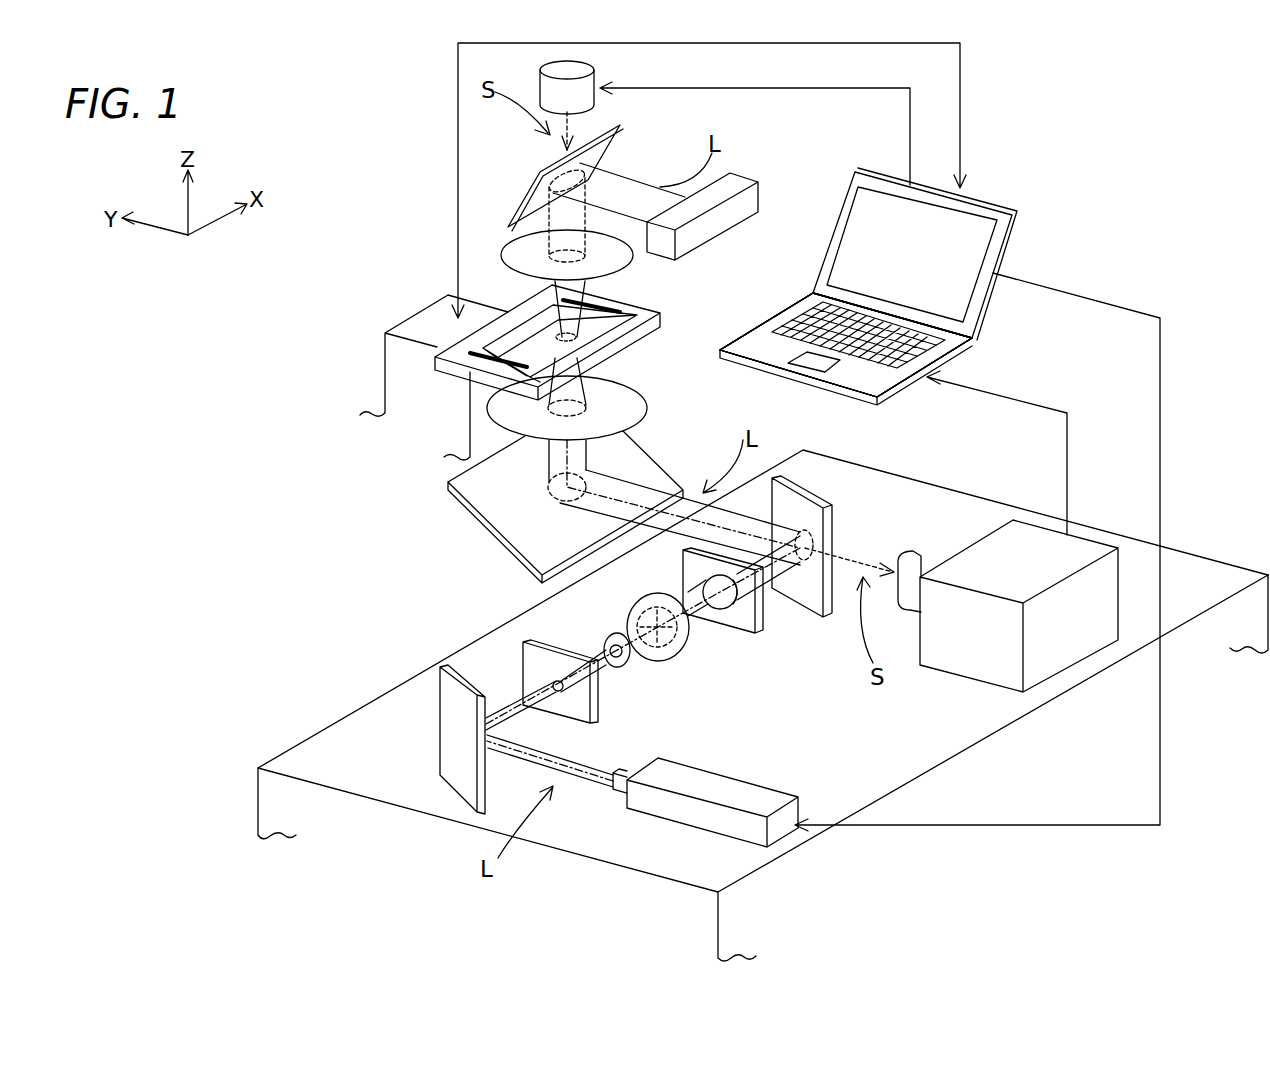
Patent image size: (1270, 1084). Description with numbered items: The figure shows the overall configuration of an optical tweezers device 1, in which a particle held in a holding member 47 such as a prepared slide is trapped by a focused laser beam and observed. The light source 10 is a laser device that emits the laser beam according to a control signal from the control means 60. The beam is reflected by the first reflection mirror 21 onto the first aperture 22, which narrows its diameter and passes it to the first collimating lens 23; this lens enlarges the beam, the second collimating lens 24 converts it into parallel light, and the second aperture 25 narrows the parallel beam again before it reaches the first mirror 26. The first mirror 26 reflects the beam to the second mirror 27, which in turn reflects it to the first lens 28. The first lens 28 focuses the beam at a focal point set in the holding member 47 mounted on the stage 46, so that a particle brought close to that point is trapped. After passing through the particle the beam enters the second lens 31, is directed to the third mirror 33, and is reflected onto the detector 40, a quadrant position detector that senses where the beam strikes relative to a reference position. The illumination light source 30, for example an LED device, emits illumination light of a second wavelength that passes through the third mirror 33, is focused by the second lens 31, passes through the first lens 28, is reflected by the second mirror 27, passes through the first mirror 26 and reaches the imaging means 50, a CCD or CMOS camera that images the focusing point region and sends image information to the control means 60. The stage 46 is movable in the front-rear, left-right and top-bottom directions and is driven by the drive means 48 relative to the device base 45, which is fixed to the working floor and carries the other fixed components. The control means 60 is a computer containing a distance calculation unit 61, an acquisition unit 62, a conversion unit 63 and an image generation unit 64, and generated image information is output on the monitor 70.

The optical tweezers device 1 is at (1165, 128).
The light source 10 is at (730, 788).
The first reflection mirror 21 is at (448, 722).
The first aperture 22 is at (597, 705).
The first collimating lens 23 is at (635, 662).
The second collimating lens 24 is at (678, 647).
The second aperture 25 is at (760, 620).
The first mirror 26 is at (835, 528).
The second mirror 27 is at (500, 533).
The first lens 28 is at (632, 410).
The illumination light source 30 is at (597, 102).
The second lens 31 is at (517, 247).
The third mirror 33 is at (533, 176).
The detector 40 is at (740, 182).
The device base 45 is at (322, 748).
The stage 46 is at (450, 370).
The holding member 47 is at (618, 306).
The drive means 48 is at (423, 322).
The imaging means 50 is at (982, 658).
The control means 60 is at (908, 272).
The distance calculation unit 61 is at (910, 392).
The acquisition unit 62 is at (846, 345).
The conversion unit 63 is at (846, 345).
The image generation unit 64 is at (846, 345).
The monitor 70 is at (968, 232).